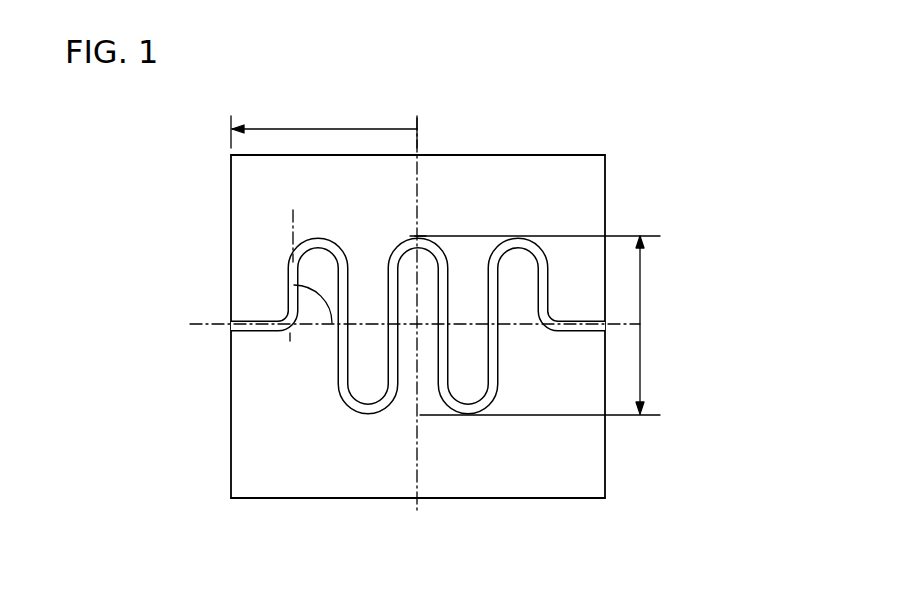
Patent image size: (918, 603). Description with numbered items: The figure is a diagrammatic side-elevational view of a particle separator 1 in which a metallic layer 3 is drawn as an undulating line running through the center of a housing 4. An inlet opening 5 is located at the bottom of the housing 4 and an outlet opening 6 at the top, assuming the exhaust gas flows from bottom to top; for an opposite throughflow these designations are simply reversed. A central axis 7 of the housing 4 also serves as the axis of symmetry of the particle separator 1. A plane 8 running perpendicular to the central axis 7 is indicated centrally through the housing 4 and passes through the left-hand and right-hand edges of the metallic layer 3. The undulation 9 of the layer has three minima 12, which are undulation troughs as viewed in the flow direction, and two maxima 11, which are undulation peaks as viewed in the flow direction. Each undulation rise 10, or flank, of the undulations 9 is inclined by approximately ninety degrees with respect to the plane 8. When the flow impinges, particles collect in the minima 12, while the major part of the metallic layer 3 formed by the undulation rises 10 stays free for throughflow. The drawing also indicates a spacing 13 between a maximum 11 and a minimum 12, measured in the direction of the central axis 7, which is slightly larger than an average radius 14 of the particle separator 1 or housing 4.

The particle separator 1 is at (440, 327).
The metallic layer 3 is at (607, 325).
The housing 4 is at (235, 195).
The inlet opening 5 is at (255, 500).
The outlet opening 6 is at (570, 153).
The central axis 7 is at (418, 459).
The plane 8 is at (195, 324).
The undulation 9 is at (535, 247).
The undulation rise 10 is at (290, 236).
The maximum 11 is at (468, 415).
The minimum 12 is at (415, 235).
The spacing 13 is at (641, 388).
The average radius 14 is at (257, 130).